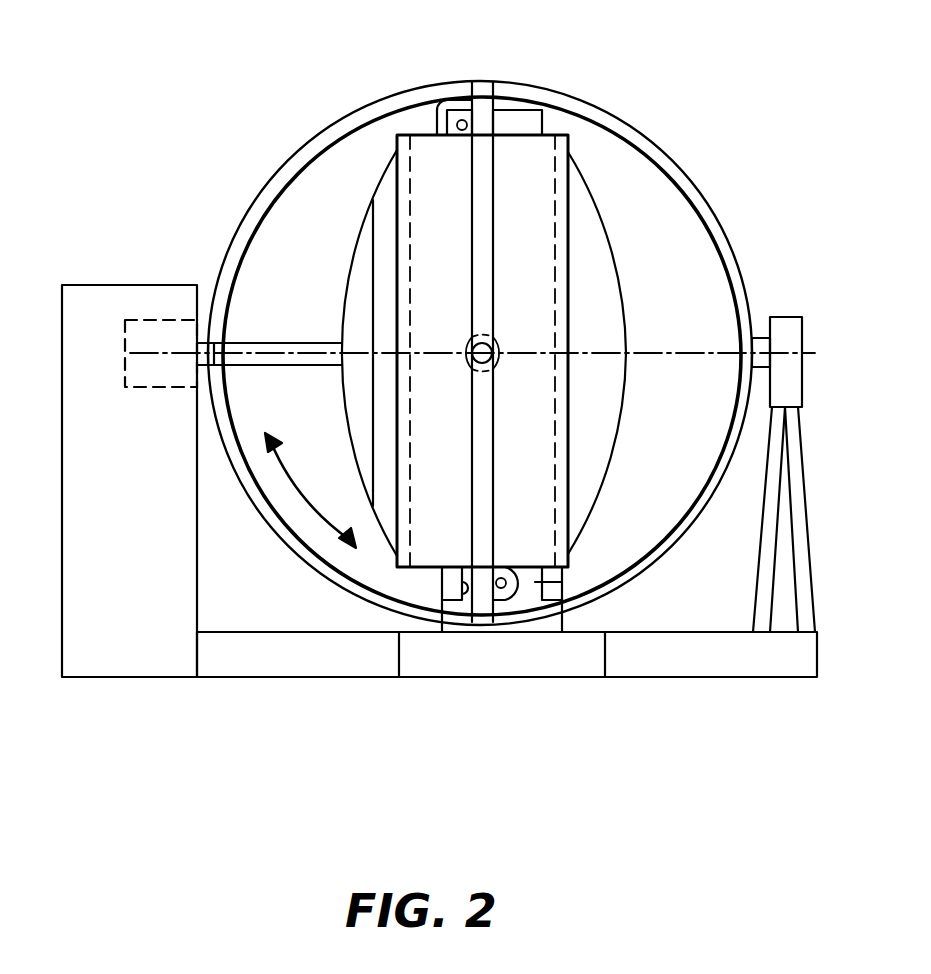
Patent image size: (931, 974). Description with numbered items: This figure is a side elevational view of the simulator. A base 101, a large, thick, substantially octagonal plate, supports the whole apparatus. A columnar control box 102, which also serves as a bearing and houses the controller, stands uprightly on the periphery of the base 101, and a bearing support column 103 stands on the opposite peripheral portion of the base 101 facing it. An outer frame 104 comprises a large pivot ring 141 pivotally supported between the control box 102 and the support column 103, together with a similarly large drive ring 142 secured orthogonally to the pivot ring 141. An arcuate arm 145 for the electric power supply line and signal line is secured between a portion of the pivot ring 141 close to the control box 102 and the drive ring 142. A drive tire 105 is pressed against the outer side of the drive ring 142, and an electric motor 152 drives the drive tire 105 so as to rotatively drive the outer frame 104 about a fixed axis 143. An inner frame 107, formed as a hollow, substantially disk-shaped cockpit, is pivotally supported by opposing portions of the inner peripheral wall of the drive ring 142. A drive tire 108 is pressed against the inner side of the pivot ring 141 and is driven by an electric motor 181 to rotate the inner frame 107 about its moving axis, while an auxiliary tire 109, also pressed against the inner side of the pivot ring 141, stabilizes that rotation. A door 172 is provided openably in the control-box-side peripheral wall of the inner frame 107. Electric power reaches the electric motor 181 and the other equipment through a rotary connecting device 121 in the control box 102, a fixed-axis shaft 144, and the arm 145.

The base 101 is at (735, 655).
The control box 102 is at (102, 297).
The bearing support column 103 is at (788, 322).
The outer frame 104 is at (778, 165).
The drive tire 105 is at (465, 593).
The inner frame 107 is at (634, 318).
The drive tire 108 is at (460, 102).
The auxiliary tire 109 is at (517, 583).
The rotary connecting device 121 is at (155, 320).
The pivot ring 141 is at (316, 145).
The drive ring 142 is at (488, 274).
The fixed axis 143 is at (708, 353).
The fixed-axis shaft 144 is at (205, 342).
The arcuate arm 145 is at (285, 343).
The electric motor 152 is at (545, 578).
The door 172 is at (357, 265).
The electric motor 181 is at (507, 125).